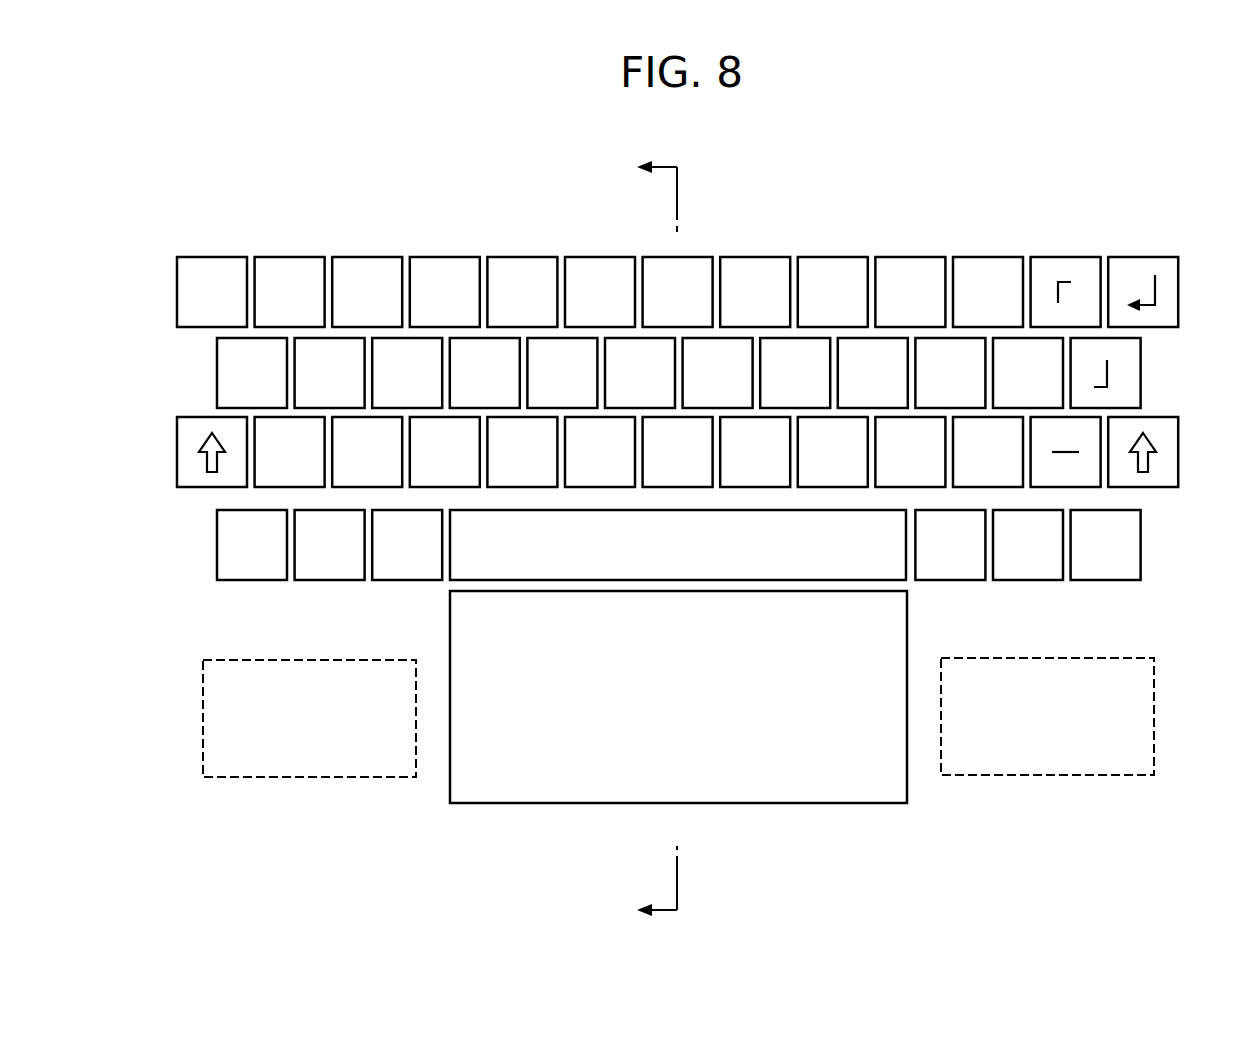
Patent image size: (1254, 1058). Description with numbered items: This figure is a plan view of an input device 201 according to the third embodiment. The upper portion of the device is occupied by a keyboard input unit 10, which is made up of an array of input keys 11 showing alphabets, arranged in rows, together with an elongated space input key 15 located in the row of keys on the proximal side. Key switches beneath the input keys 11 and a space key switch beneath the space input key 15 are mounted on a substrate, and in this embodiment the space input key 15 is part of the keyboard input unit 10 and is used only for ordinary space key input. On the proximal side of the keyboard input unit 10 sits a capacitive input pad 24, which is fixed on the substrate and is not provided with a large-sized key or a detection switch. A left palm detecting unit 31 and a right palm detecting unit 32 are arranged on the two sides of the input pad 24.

The input device 201 is at (993, 203).
The keyboard input unit 10 is at (1206, 255).
The input keys 11 is at (833, 265).
The space input key 15 is at (503, 567).
The capacitive input pad 24 is at (783, 790).
The left palm detecting unit 31 is at (260, 777).
The right palm detecting unit 32 is at (1042, 775).